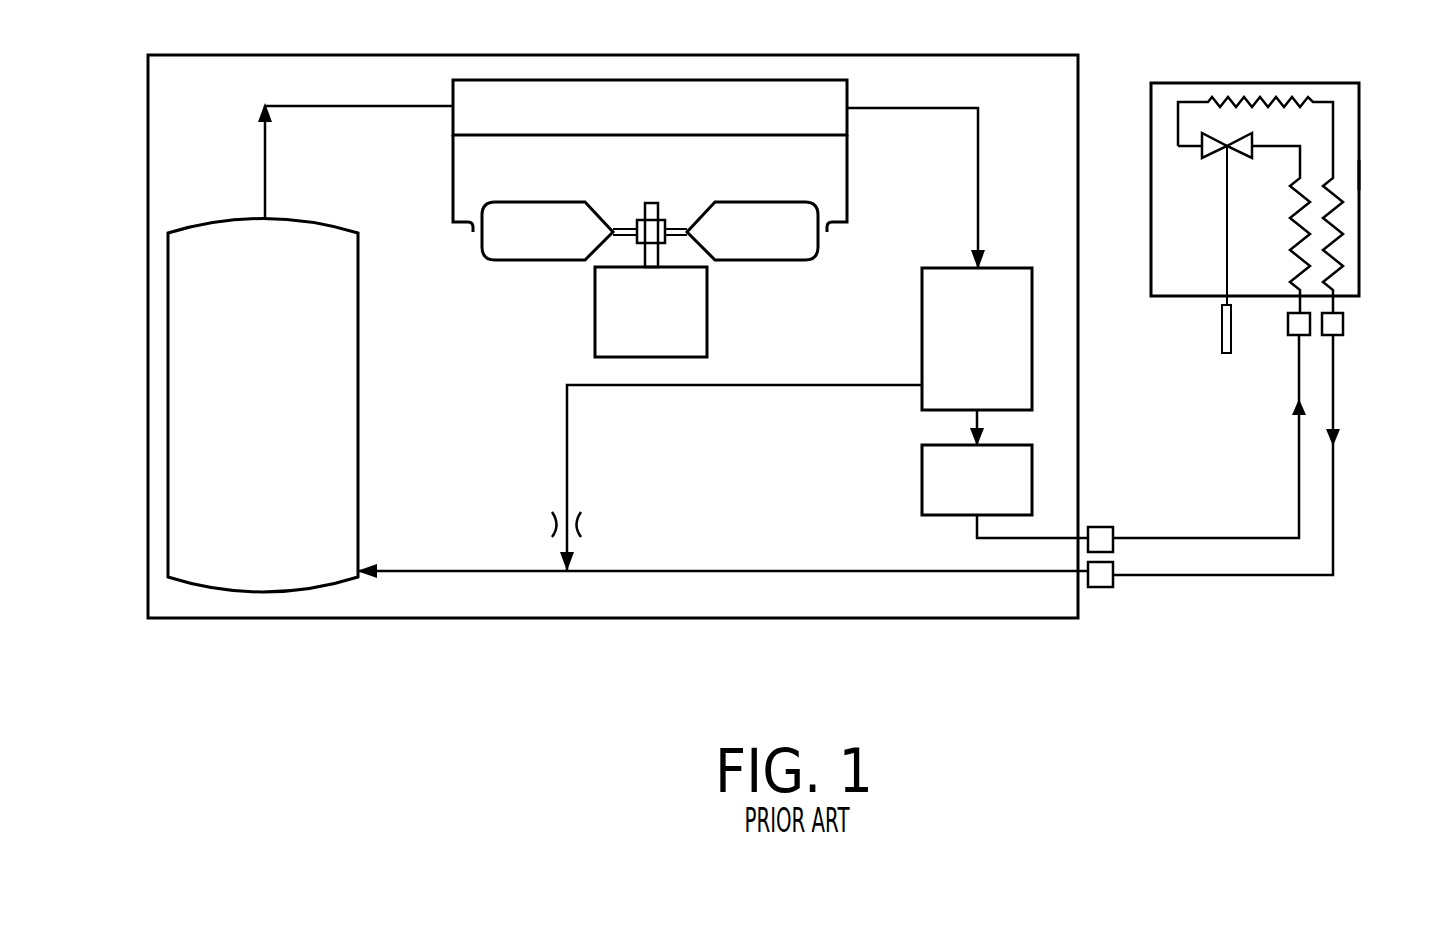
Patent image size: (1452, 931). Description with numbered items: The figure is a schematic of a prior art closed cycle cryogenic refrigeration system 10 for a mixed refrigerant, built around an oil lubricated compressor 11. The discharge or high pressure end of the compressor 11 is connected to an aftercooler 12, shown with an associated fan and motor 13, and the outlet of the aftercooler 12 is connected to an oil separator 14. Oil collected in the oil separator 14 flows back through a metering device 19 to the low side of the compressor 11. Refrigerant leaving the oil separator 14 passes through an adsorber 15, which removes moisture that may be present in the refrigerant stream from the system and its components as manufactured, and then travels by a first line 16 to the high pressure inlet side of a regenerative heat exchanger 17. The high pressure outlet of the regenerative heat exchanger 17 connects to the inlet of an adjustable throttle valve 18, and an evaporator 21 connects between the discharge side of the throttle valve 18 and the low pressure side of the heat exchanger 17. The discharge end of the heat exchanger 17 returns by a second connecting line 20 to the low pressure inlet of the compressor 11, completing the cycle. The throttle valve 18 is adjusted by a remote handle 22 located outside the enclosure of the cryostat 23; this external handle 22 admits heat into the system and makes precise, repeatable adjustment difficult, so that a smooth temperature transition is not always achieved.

The closed cycle cryogenic refrigeration system 10 is at (826, 657).
The oil lubricated compressor 11 is at (248, 423).
The aftercooler 12 is at (636, 127).
The fan motor 13 is at (636, 331).
The oil separator 14 is at (963, 358).
The adsorber 15 is at (963, 497).
The first line 16 is at (1178, 538).
The regenerative heat exchanger 17 is at (1359, 221).
The adjustable throttle valve 18 is at (1176, 212).
The metering device 19 is at (583, 523).
The second connecting line 20 is at (1201, 576).
The evaporator 21 is at (1270, 94).
The remote handle 22 is at (1220, 330).
The cryostat 23 is at (1360, 173).